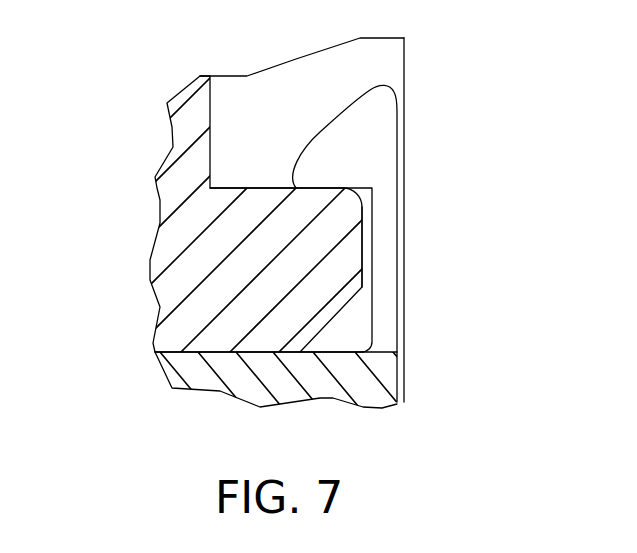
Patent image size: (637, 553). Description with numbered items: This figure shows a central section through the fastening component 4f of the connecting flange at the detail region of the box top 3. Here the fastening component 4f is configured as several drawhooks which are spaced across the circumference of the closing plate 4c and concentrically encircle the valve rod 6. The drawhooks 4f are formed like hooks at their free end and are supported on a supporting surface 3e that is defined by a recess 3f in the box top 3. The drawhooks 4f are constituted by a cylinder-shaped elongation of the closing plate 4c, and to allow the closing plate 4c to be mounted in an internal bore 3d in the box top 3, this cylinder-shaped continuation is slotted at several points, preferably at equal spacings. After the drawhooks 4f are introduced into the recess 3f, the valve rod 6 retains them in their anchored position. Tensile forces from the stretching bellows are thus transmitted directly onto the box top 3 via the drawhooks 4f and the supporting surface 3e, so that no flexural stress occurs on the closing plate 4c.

The box top 3 is at (165, 284).
The internal bore 3d is at (363, 238).
The supporting surface 3e is at (238, 188).
The recess 3f is at (300, 90).
The closing plate 4c is at (375, 392).
The fastening component 4f is at (368, 155).
The valve rod 6 is at (481, 297).